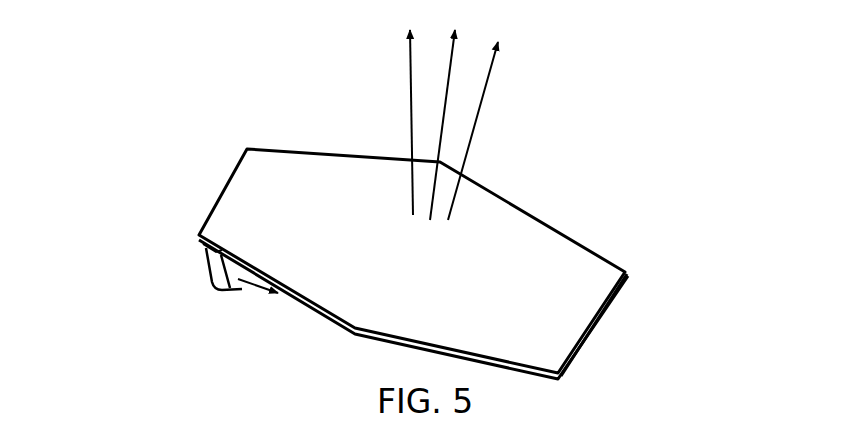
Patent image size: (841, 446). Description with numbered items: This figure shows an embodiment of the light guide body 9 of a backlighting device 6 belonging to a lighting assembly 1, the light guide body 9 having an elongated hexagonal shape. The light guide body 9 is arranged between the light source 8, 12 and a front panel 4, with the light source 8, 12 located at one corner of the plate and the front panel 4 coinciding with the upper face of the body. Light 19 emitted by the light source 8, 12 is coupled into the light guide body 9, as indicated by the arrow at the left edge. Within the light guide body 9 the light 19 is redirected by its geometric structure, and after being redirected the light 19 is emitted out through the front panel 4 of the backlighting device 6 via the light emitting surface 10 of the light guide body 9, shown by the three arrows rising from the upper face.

The lighting assembly 1 is at (375, 204).
The backlighting device 6 is at (577, 172).
The front panel 4 is at (375, 229).
The light emitting surface 10 is at (278, 197).
The light source 8 is at (145, 254).
The light source 12 is at (212, 252).
The light guide body 9 is at (625, 331).
The light 19 is at (412, 102).